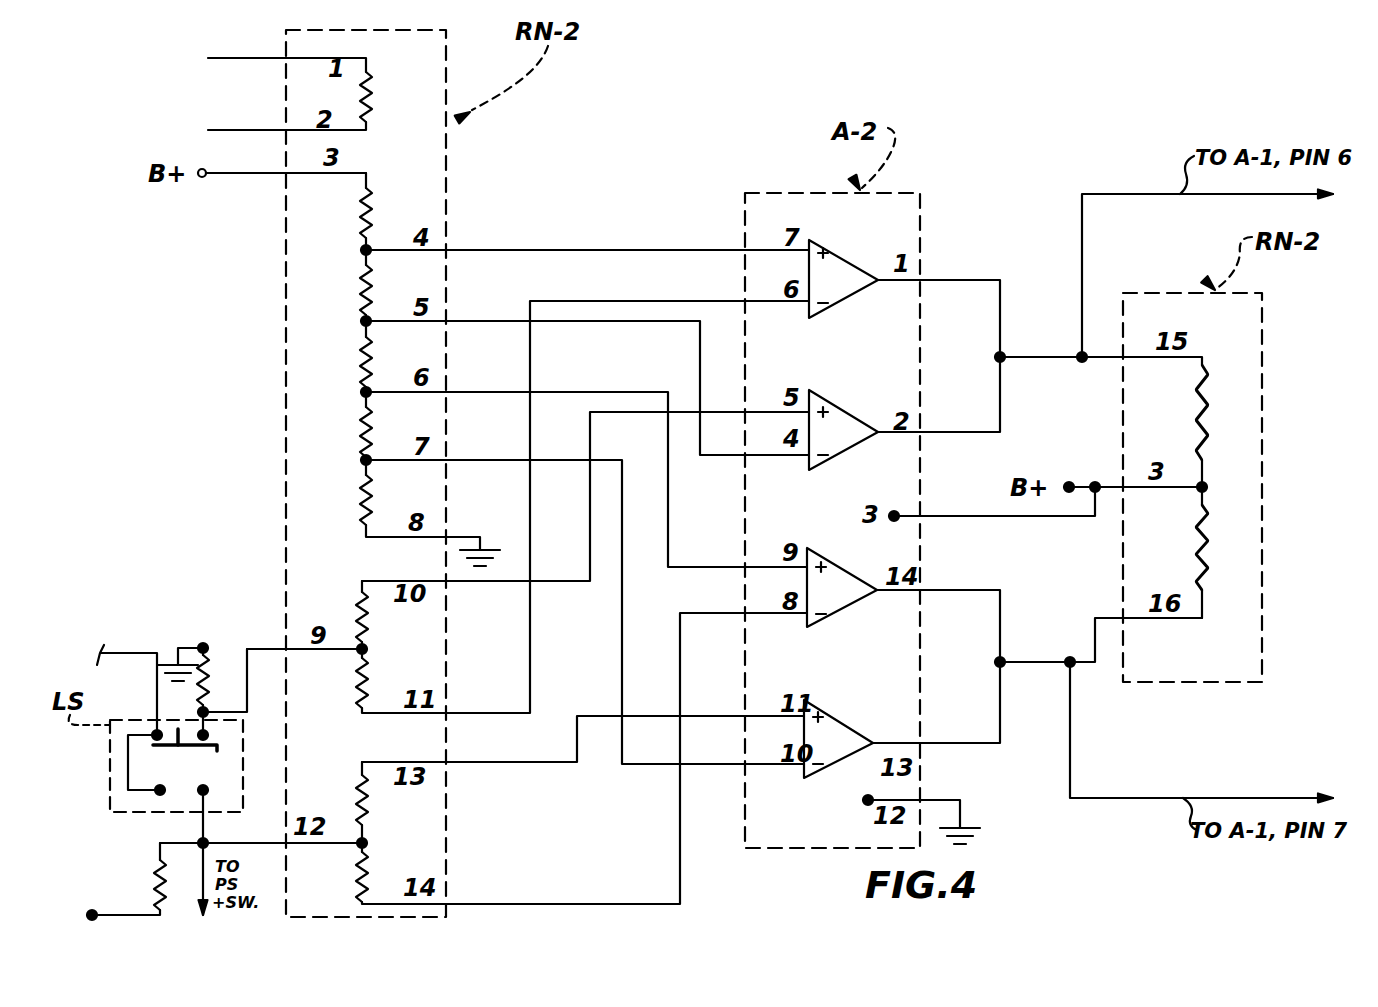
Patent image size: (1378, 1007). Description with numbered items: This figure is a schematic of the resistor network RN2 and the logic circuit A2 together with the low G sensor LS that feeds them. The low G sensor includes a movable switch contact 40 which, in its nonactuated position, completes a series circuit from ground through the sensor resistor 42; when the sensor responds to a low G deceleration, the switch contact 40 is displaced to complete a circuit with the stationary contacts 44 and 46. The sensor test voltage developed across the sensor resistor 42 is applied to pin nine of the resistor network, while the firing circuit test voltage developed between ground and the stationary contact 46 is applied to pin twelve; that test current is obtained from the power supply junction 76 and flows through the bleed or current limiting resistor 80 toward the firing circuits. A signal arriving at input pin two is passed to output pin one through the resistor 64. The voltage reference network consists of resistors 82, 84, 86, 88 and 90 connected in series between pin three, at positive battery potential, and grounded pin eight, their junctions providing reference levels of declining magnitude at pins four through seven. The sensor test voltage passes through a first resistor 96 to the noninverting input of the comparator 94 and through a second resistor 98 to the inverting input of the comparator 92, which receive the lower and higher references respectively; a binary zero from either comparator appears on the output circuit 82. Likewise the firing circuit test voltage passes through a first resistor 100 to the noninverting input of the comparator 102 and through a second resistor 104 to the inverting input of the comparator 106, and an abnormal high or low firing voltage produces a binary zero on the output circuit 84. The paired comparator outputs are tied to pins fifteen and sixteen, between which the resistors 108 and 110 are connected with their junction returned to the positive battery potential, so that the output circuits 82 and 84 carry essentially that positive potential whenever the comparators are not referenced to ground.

The movable switch contact 40 is at (188, 746).
The sensor resistor 42 is at (216, 670).
The stationary contact 44 is at (144, 742).
The stationary contact 46 is at (209, 813).
The resistor 64 is at (370, 95).
The junction 76 is at (90, 914).
The bleed or current limiting resistor 80 is at (154, 870).
The resistor / output circuit 82 is at (356, 212).
The resistor / output circuit 84 is at (356, 287).
The resistor 86 is at (356, 357).
The resistor 88 is at (356, 427).
The resistor 90 is at (356, 497).
The voltage comparator 92 is at (840, 270).
The voltage comparator 94 is at (840, 419).
The first resistor 96 is at (370, 623).
The second resistor 98 is at (354, 678).
The first resistor 100 is at (356, 796).
The comparator 102 is at (834, 724).
The second resistor 104 is at (354, 880).
The comparator 106 is at (840, 602).
The resistor 108 is at (1196, 425).
The resistor 110 is at (1190, 552).